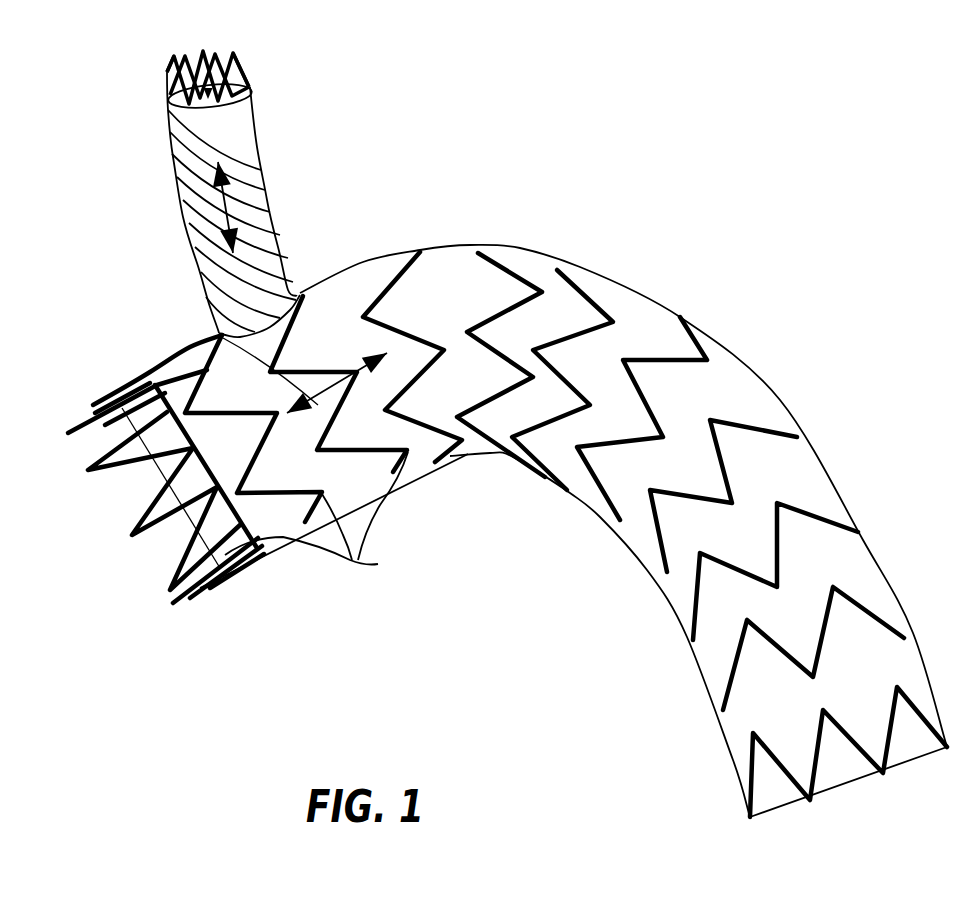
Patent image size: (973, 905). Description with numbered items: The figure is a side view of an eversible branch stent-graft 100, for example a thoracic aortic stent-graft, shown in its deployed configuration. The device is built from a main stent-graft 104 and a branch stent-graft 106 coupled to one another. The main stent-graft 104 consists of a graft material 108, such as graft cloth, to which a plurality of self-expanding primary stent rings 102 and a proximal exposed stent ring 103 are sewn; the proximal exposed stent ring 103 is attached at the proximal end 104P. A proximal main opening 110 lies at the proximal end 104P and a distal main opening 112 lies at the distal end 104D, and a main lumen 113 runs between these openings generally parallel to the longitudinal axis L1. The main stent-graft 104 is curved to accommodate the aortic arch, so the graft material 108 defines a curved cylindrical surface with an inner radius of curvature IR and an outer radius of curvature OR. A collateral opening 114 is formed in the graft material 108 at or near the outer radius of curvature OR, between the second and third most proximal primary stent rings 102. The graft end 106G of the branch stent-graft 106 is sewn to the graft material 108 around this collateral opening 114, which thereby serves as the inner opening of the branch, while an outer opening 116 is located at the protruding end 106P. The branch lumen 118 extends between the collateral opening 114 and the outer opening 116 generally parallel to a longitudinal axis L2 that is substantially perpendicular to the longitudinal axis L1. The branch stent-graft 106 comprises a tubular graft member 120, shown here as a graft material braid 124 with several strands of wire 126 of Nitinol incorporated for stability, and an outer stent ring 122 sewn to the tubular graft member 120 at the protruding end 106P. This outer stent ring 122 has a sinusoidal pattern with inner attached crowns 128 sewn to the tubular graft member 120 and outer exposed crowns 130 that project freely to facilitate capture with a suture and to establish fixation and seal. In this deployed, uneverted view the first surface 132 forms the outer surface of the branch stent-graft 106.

The eversible branch stent-graft 100 is at (855, 245).
The primary stent rings 102 is at (372, 563).
The proximal exposed stent ring 103 is at (167, 593).
The main stent-graft 104 is at (519, 262).
The proximal end of main stent-graft 104P is at (142, 485).
The distal end of main stent-graft 104D is at (897, 799).
The branch stent-graft 106 is at (265, 172).
The protruding end of branch stent-graft 106P is at (247, 90).
The graft end of branch stent-graft 106G is at (300, 293).
The graft material 108 is at (635, 307).
The proximal main opening 110 is at (187, 540).
The distal main opening 112 is at (797, 803).
The main lumen 113 is at (100, 429).
The collateral opening 114 is at (217, 323).
The outer opening 116 is at (222, 58).
The branch lumen 118 is at (193, 64).
The tubular graft member 120 is at (104, 170).
The outer stent ring 122 is at (250, 62).
The graft material braid 124 is at (187, 147).
The strands of wire 126 is at (192, 197).
The inner attached crowns 128 is at (175, 100).
The outer exposed crowns 130 is at (167, 72).
The first surface 132 is at (273, 230).
The outer radius of curvature OR is at (462, 247).
The inner radius of curvature IR is at (595, 518).
The longitudinal axis of main stent-graft L1 is at (222, 340).
The longitudinal axis of branch stent-graft L2 is at (227, 215).